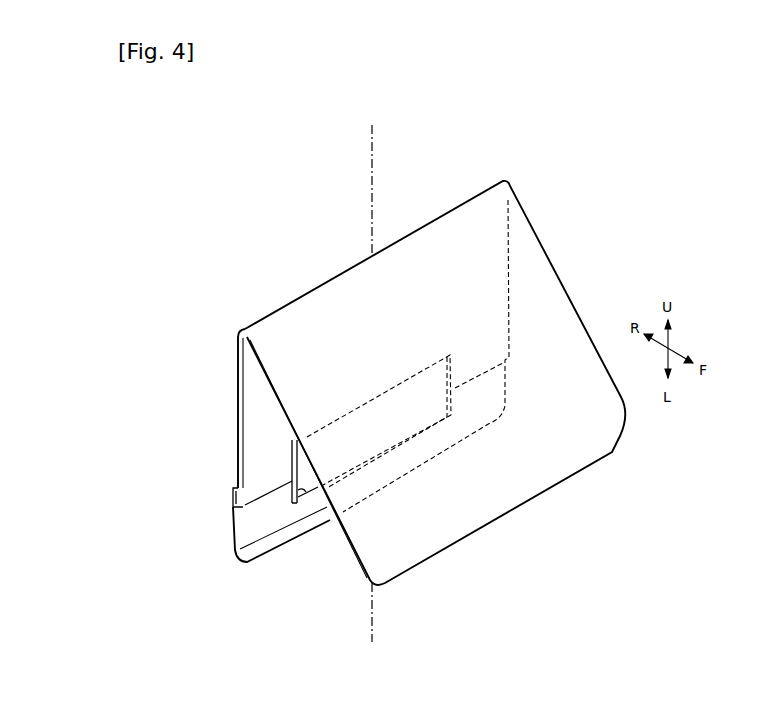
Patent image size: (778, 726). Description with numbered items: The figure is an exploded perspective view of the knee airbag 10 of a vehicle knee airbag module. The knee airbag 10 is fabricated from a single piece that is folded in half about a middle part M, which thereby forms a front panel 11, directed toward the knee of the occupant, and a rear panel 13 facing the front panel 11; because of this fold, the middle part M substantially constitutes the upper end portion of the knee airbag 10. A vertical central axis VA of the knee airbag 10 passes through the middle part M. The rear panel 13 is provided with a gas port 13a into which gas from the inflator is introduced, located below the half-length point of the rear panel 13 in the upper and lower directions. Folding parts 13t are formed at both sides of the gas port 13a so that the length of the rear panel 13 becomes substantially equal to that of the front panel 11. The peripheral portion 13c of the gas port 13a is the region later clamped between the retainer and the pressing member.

The knee airbag 10 is at (387, 354).
The front panel 11 is at (547, 270).
The rear panel 13 is at (238, 397).
The gas port 13a is at (305, 494).
The peripheral portion 13c is at (288, 460).
The folding parts 13t is at (233, 501).
The middle part M is at (308, 292).
The vertical central axis VA is at (373, 182).